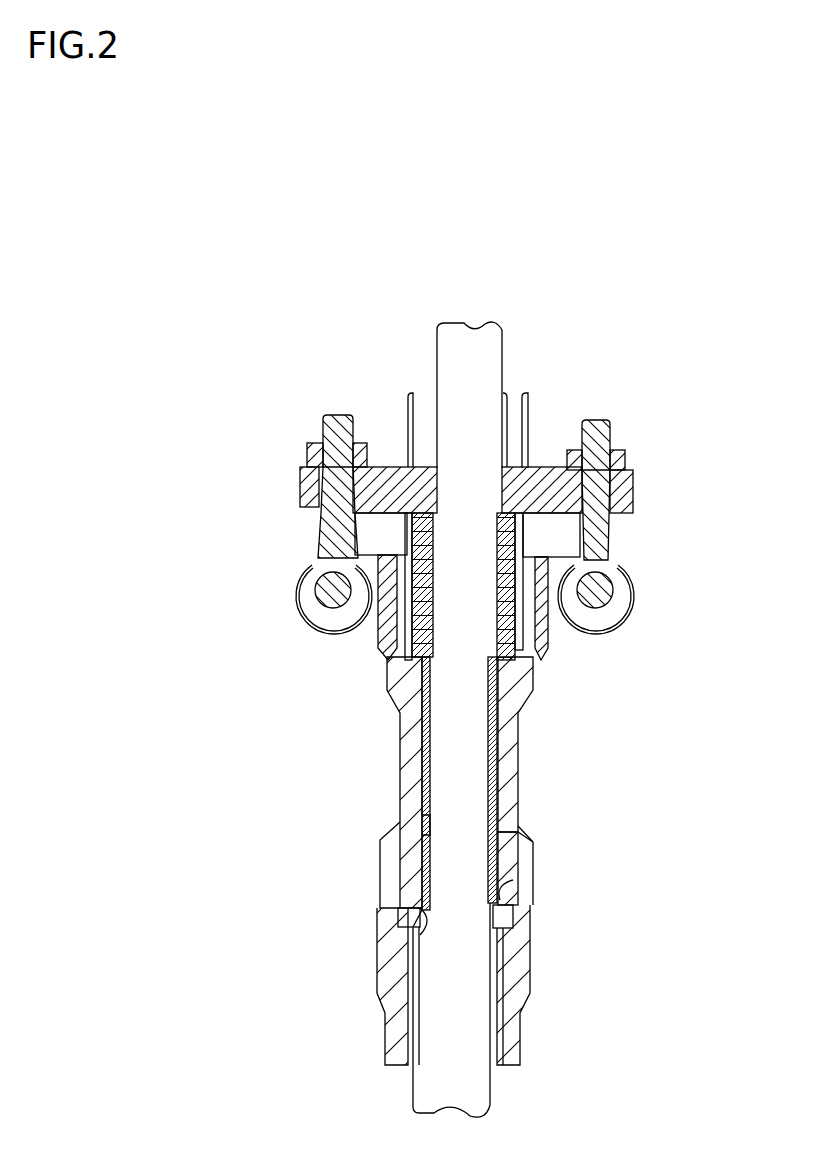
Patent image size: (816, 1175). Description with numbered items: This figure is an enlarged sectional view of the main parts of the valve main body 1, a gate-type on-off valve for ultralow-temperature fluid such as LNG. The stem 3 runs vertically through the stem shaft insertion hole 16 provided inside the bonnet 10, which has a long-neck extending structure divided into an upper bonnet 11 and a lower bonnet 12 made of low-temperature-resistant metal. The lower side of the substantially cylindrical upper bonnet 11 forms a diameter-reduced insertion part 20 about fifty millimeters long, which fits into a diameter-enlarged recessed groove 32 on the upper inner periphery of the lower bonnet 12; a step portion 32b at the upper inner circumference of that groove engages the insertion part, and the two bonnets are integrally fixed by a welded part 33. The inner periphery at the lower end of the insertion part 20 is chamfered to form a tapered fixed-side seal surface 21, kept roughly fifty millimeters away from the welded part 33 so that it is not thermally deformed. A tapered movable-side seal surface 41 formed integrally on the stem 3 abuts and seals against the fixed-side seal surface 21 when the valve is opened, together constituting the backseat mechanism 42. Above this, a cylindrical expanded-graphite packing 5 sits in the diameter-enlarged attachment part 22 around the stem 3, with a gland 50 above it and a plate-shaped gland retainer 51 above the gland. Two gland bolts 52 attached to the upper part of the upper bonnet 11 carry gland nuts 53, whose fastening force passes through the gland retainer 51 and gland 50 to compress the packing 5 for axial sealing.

The valve main body 1 is at (378, 950).
The stem 3 is at (457, 720).
The packing 5 is at (375, 642).
The bonnet 10 is at (340, 782).
The upper bonnet 11 is at (396, 742).
The lower bonnet 12 is at (383, 883).
The stem shaft insertion hole 16 is at (530, 993).
The insertion part 20 is at (530, 865).
The fixed-side seal surface 21 is at (395, 940).
The attachment part 22 is at (470, 652).
The diameter-enlarged recessed groove 32 is at (515, 898).
The step portion 32b is at (428, 825).
The welded part 33 is at (522, 833).
The movable-side seal surface 41 is at (515, 903).
The backseat mechanism 42 is at (487, 905).
The gland 50 is at (400, 543).
The gland retainer 51 is at (540, 470).
The gland bolt 52 is at (595, 540).
The gland nut 53 is at (315, 458).